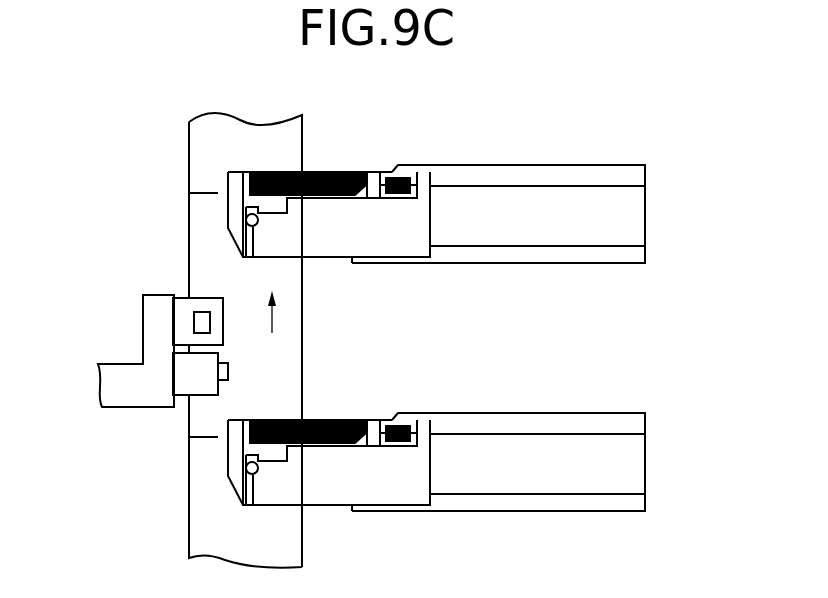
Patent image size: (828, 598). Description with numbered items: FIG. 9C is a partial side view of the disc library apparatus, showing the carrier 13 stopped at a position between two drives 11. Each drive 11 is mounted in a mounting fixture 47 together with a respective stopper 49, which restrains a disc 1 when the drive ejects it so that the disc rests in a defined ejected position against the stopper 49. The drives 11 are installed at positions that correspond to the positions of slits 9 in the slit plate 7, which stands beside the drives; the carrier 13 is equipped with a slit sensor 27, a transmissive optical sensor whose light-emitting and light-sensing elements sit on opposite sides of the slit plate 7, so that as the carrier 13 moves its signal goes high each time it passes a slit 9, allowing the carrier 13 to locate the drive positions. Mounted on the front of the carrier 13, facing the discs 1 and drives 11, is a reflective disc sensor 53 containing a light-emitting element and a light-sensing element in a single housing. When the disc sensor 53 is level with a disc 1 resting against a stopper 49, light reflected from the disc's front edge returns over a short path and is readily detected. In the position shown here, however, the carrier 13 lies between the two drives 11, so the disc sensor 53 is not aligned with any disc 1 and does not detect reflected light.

The slit plate 7 is at (233, 130).
The slit 9 is at (208, 192).
The disc 1 is at (332, 172).
The drive 11 is at (498, 177).
The mounting fixture 47 is at (548, 225).
The stopper 49 is at (368, 230).
The carrier 13 is at (130, 363).
The slit sensor 27 is at (200, 312).
The disc sensor 53 is at (217, 378).